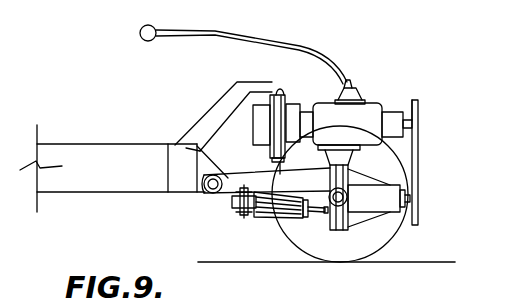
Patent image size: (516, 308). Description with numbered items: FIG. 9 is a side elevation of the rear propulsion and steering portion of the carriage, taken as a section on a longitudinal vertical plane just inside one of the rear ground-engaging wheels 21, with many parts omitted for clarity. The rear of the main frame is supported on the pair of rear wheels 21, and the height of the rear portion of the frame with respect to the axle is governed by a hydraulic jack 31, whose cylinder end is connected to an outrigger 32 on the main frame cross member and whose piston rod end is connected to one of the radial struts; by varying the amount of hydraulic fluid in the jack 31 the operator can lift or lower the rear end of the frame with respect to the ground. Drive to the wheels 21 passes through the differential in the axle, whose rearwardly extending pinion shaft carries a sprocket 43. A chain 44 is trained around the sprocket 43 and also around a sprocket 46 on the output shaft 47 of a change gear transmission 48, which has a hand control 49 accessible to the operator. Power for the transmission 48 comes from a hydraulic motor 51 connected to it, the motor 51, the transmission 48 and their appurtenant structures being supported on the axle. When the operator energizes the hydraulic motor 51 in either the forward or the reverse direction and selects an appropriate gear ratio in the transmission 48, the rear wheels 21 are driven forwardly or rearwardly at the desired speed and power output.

The rear ground-engaging wheels 21 is at (400, 244).
The hydraulic jack 31 is at (286, 110).
The outrigger 32 is at (208, 112).
The sprocket 43 is at (414, 210).
The chain 44 is at (418, 172).
The sprocket 46 is at (417, 116).
The output shaft 47 is at (406, 120).
The change gear transmission 48 is at (392, 78).
The hand control 49 is at (143, 42).
The hydraulic motor 51 is at (260, 122).